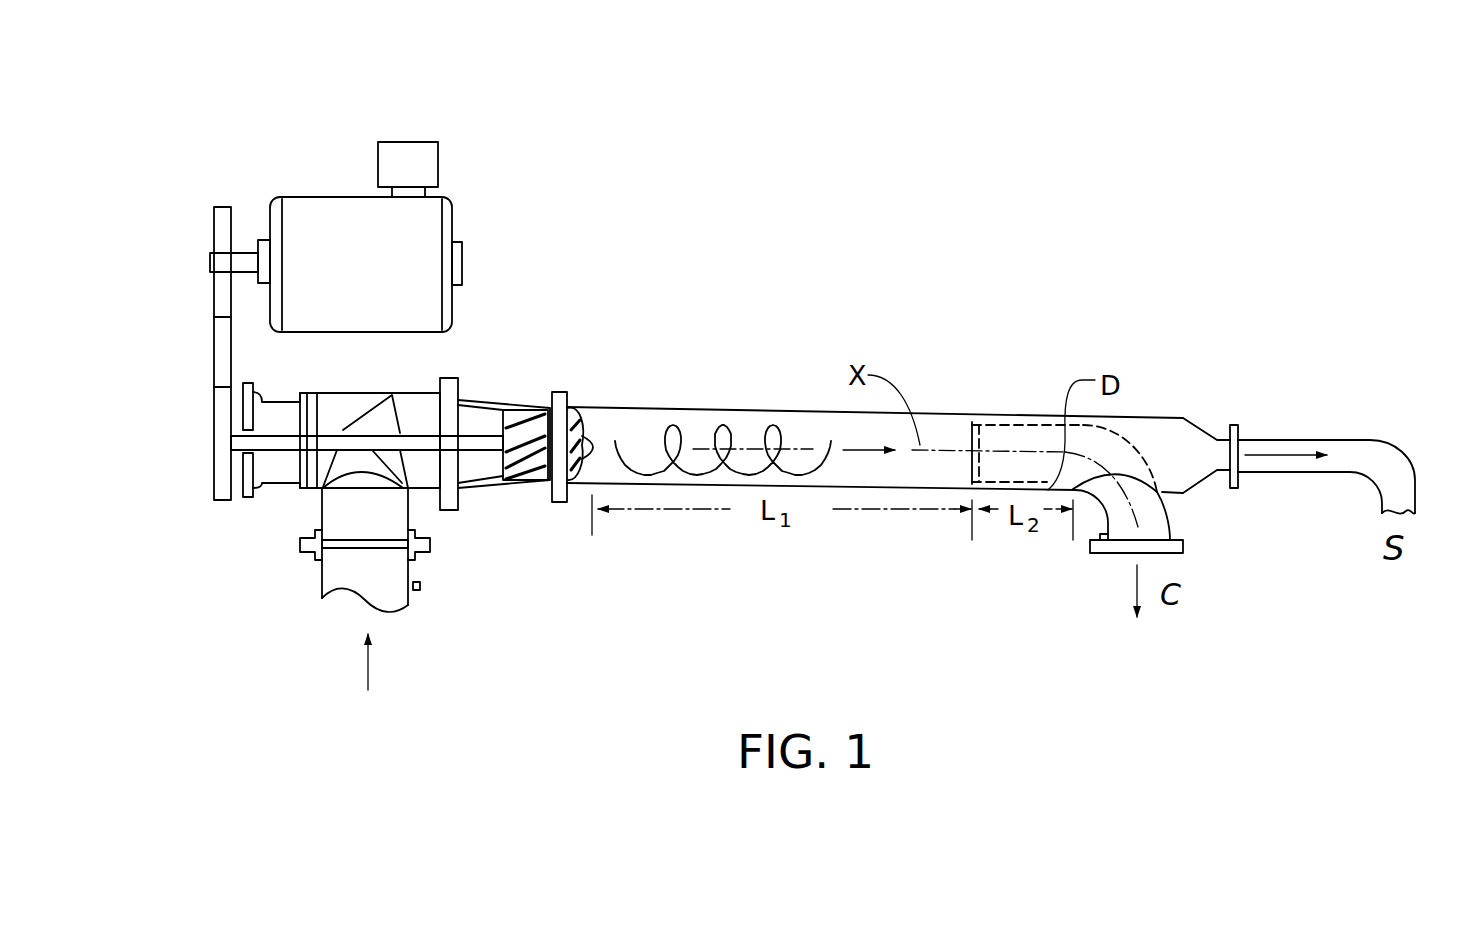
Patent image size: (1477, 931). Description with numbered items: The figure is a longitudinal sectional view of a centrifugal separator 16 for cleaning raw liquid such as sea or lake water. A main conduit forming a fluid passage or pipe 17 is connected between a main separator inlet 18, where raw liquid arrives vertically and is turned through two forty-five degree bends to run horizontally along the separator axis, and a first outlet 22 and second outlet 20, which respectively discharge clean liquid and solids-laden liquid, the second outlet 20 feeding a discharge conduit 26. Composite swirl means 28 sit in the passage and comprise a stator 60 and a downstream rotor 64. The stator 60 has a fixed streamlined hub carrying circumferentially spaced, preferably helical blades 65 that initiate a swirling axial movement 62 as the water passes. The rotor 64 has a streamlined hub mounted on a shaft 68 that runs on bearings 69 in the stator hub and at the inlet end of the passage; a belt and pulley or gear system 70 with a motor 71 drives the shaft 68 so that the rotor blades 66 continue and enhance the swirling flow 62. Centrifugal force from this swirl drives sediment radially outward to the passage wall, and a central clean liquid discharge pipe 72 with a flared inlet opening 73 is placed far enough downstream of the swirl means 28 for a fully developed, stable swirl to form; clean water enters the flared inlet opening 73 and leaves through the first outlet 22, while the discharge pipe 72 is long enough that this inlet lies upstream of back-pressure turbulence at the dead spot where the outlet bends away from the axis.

The centrifugal separator 16 is at (806, 361).
The pipe 17 is at (793, 408).
The main separator inlet 18 is at (330, 582).
The second outlet 20 is at (1170, 417).
The first outlet 22 is at (1168, 518).
The discharge conduit 26 is at (1415, 487).
The composite swirl means 28 is at (523, 381).
The stator 60 is at (533, 486).
The swirling axial movement 62 is at (670, 425).
The rotor 64 is at (568, 503).
The blades 65 is at (513, 422).
The rotor blades 66 is at (558, 415).
The shaft 68 is at (277, 453).
The bearings 69 is at (250, 428).
The belt and pulley or gear system 70 is at (220, 194).
The motor 71 is at (352, 210).
The central clean liquid discharge pipe 72 is at (1017, 423).
The flared inlet opening 73 is at (972, 437).